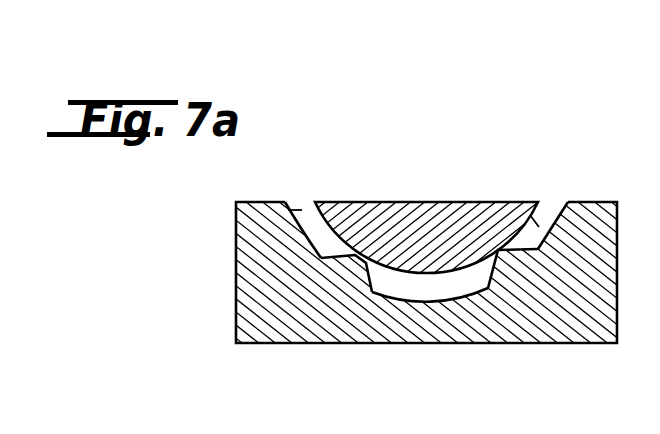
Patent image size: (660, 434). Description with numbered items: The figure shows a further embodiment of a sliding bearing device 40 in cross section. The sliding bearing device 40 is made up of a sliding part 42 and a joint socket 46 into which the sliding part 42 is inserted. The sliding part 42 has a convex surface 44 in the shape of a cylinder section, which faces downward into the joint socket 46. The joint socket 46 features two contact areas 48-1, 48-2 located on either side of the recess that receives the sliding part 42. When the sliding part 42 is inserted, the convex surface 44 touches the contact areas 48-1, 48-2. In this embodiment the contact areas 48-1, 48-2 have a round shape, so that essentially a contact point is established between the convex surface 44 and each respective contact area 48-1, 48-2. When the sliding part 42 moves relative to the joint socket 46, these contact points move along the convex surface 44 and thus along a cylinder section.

The sliding bearing device 40 is at (508, 142).
The sliding part 42 is at (380, 203).
The convex surface 44 is at (531, 213).
The joint socket 46 is at (294, 203).
The contact area 48-1 is at (357, 254).
The contact area 48-2 is at (500, 250).